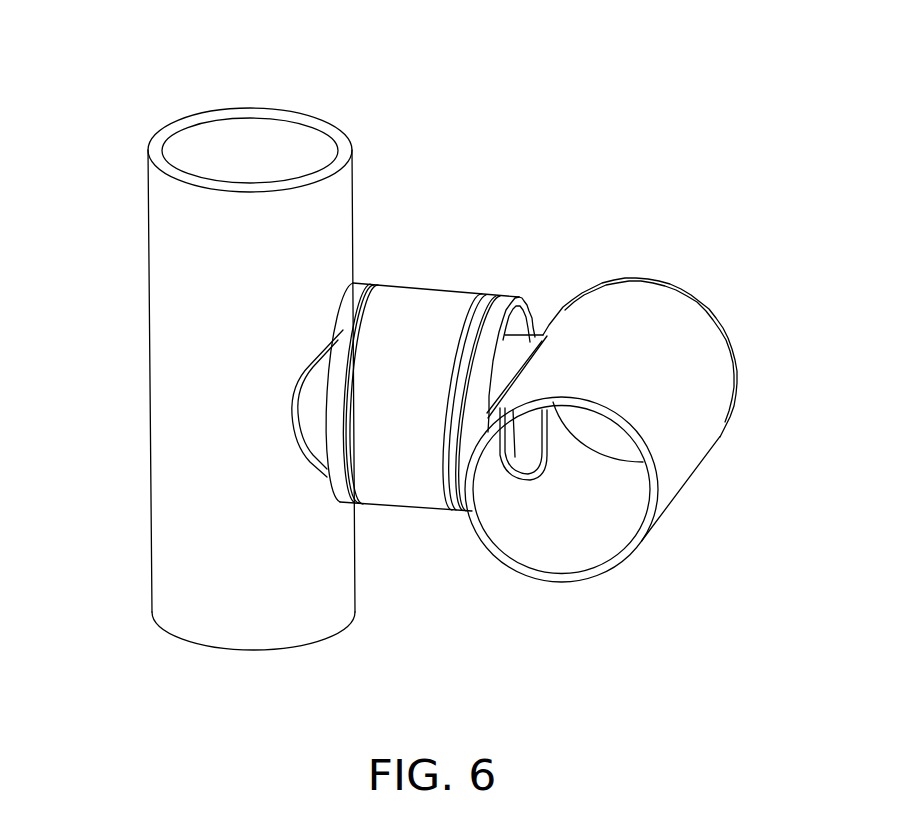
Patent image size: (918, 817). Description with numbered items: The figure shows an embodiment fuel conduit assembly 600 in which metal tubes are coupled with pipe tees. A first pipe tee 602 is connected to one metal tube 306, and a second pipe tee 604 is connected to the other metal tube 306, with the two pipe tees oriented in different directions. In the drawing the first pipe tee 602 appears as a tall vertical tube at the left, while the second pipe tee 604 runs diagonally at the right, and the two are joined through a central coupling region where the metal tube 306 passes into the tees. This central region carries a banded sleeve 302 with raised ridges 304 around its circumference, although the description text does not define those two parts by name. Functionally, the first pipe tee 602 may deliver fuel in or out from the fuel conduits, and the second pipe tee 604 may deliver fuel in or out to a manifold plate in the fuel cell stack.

The assembly 600 is at (125, 82).
The first pipe tee 602 is at (165, 299).
The second pipe tee 604 is at (693, 443).
The clamp body 302 is at (442, 292).
The ridges 304 is at (365, 283).
The metal tube 306 is at (510, 450).